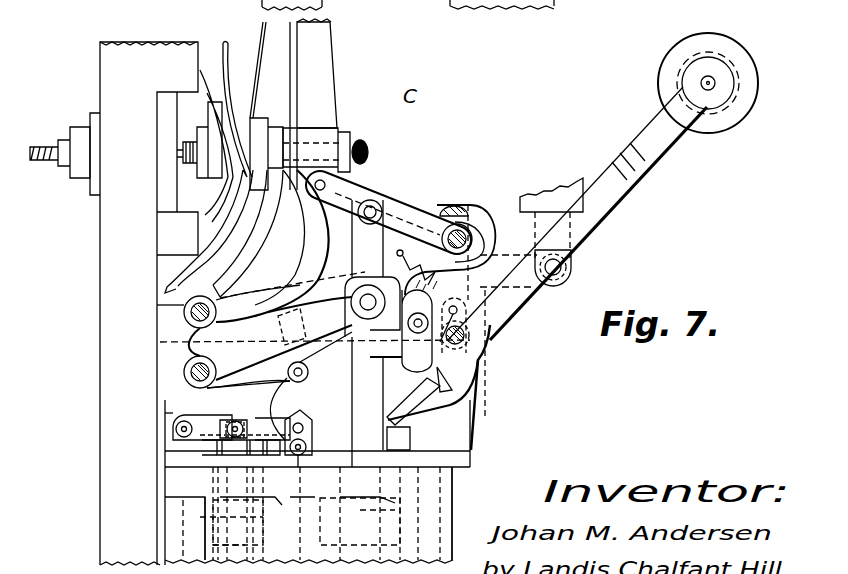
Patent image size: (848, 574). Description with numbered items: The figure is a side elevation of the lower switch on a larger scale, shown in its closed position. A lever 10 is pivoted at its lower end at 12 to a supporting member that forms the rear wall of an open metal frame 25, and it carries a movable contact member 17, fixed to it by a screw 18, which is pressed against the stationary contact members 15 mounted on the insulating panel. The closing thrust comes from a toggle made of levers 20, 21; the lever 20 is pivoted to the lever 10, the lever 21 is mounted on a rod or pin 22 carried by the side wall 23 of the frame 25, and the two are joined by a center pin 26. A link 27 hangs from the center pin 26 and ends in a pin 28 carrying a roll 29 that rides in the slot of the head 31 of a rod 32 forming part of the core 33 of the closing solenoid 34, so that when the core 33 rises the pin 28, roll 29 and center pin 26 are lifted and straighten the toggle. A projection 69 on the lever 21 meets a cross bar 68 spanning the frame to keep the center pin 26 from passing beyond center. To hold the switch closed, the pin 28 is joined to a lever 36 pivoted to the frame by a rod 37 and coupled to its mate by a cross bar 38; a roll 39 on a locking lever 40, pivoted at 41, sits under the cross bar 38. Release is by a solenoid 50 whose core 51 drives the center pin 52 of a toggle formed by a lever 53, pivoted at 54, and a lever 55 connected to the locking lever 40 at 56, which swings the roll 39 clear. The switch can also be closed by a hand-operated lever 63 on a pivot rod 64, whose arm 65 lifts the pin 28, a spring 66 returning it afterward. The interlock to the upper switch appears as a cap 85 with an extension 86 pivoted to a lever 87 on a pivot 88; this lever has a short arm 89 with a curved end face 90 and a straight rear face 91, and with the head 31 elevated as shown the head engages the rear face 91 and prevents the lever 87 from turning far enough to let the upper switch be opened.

The lever 10 is at (320, 70).
The pivot 12 is at (186, 317).
The stationary contact members 15 is at (170, 68).
The movable contact member 17 is at (202, 68).
The screw 18 is at (353, 142).
The toggle lever 20 is at (326, 187).
The toggle lever 21 is at (398, 222).
The rod or pin 22 is at (475, 215).
The side wall 23 is at (330, 280).
The open metal frame 25 is at (455, 444).
The center pin 26 is at (374, 207).
The link 27 is at (345, 232).
The pin 28 is at (360, 300).
The roll 29 is at (352, 310).
The head 31 is at (372, 295).
The rod 32 is at (353, 397).
The core 33 is at (396, 498).
The solenoid or magnet 34 is at (452, 502).
The lever 36 is at (315, 307).
The rod 37 is at (192, 365).
The cross bar 38 is at (297, 314).
The roll 39 is at (312, 365).
The locking lever 40 is at (248, 406).
The pivot 41 is at (298, 467).
The solenoid or magnet 50 is at (180, 510).
The core 51 is at (215, 545).
The center pin 52 is at (235, 420).
The toggle lever 53 is at (208, 425).
The pivot 54 is at (173, 422).
The toggle lever 55 is at (260, 432).
The pivotal connection 56 is at (304, 420).
The hand-operated lever 63 is at (632, 180).
The pivot pin or rod 64 is at (470, 335).
The arm 65 is at (475, 402).
The spring 66 is at (445, 239).
The cross bar 68 is at (457, 206).
The projection 69 is at (447, 225).
The cap 85 is at (565, 190).
The extension 86 is at (572, 255).
The lever 87 is at (490, 290).
The pivot 88 is at (418, 313).
The short arm 89 is at (450, 384).
The curved end face 90 is at (413, 401).
The straight rear face 91 is at (402, 360).